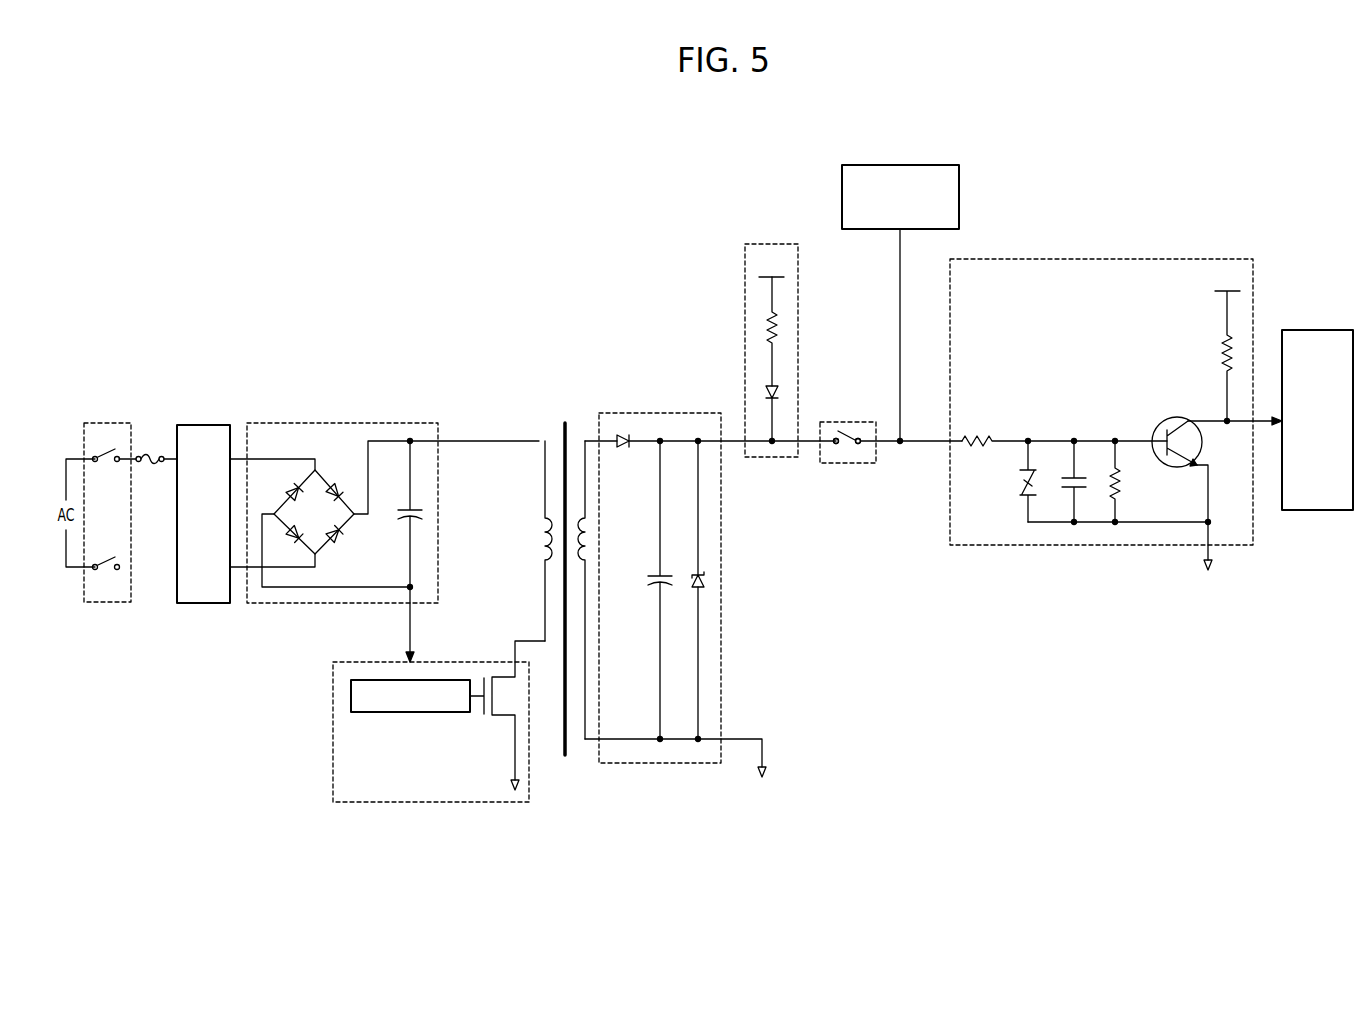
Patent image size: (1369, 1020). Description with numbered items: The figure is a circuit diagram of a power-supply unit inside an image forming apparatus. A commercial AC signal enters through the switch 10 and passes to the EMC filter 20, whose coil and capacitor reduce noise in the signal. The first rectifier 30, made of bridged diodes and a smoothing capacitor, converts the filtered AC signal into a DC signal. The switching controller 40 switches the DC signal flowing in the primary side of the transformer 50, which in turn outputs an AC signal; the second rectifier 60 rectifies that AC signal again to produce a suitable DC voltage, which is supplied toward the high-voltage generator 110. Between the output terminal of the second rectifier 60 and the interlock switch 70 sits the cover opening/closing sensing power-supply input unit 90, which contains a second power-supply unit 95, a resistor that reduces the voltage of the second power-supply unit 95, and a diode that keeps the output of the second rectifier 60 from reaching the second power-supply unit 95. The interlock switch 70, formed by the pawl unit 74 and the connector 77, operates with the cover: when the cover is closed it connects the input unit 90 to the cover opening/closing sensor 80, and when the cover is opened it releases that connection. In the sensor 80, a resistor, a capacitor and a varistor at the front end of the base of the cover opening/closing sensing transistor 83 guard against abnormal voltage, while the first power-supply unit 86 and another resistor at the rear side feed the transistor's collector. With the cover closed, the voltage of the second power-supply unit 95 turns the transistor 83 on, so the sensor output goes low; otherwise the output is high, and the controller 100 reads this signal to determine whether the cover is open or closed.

The switch 10 is at (107, 423).
The EMC filter 20 is at (203, 425).
The first rectifier 30 is at (343, 423).
The switching controller 40 is at (333, 731).
The transformer 50 is at (562, 425).
The second rectifier 60 is at (660, 413).
The interlock switch 70 is at (848, 422).
The pawl unit 74 is at (858, 445).
The connector 77 is at (836, 445).
The cover opening/closing sensor 80 is at (1116, 391).
The cover opening/closing sensing transistor 83 is at (1170, 418).
The first power-supply unit 86 is at (1223, 259).
The cover opening/closing sensing power-supply input unit 90 is at (749, 350).
The second power-supply unit 95 is at (745, 265).
The controller 100 is at (1318, 330).
The high-voltage generator 110 is at (900, 165).